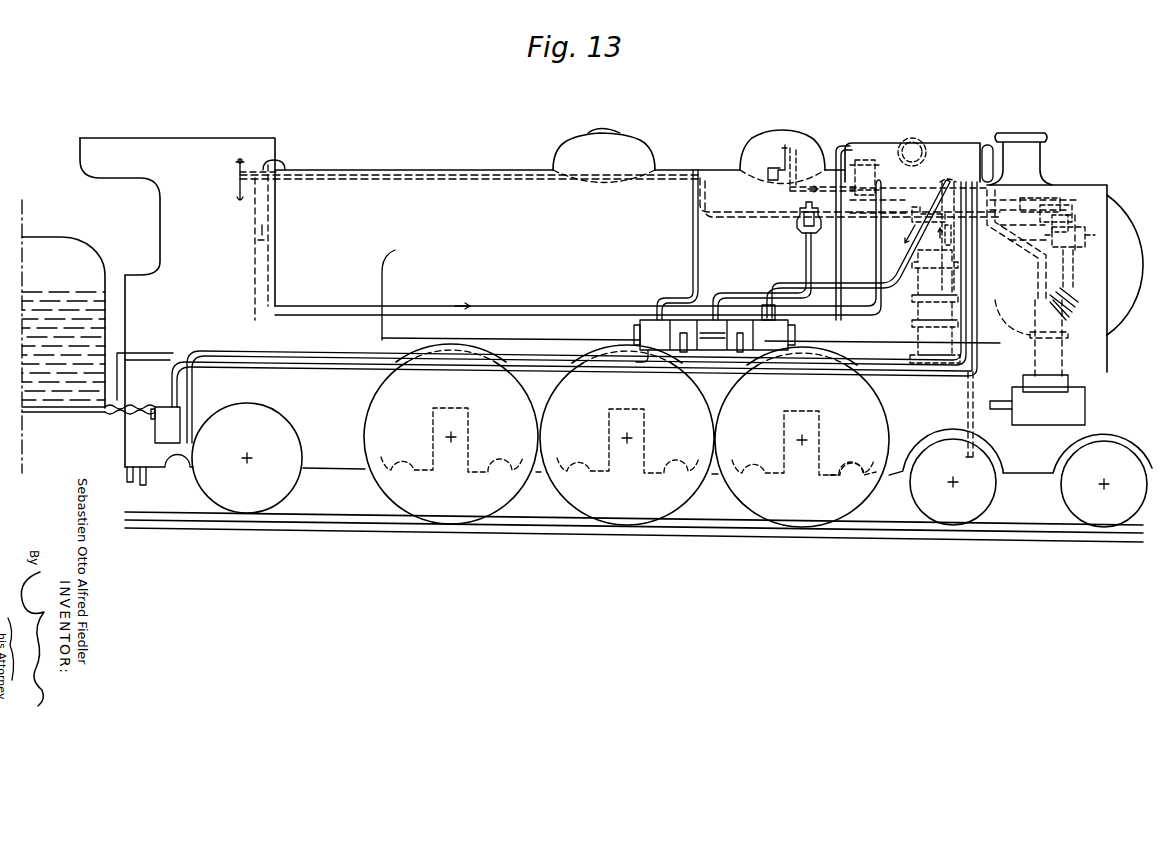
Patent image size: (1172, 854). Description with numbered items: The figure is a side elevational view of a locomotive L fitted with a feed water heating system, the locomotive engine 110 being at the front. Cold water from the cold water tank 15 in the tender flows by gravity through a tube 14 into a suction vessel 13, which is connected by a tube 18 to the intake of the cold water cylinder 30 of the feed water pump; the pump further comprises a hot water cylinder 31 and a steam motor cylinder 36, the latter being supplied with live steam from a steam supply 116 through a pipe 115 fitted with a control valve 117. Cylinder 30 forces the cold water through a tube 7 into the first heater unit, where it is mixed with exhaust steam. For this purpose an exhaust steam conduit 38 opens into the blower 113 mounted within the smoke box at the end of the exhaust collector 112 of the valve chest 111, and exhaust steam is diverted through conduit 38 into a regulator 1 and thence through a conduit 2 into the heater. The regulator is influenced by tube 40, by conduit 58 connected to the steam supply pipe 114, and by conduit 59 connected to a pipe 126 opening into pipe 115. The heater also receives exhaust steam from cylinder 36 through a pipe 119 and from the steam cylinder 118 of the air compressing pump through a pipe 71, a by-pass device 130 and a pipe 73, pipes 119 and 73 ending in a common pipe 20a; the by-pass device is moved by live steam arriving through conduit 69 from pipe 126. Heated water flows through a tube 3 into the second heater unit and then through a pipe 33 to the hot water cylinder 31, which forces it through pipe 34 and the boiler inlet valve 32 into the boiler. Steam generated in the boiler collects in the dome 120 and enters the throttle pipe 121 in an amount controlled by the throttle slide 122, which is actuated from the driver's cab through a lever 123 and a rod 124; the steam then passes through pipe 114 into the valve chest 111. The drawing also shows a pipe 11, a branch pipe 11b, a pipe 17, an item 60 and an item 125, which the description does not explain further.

The regulator-expander 1 is at (1077, 248).
The conduit 2 is at (993, 226).
The tube 3 is at (873, 160).
The tube 7 is at (841, 148).
The pipe 11 is at (974, 277).
The branch pipe 11b is at (964, 461).
The suction vessel 13 is at (167, 433).
The tube 14 is at (107, 413).
The cold water tank 15 is at (77, 405).
The pipe 17 is at (968, 260).
The tube 18 is at (343, 357).
The common pipe 20a is at (951, 176).
The cold water cylinder 30 is at (650, 334).
The hot water cylinder 31 is at (707, 341).
The boiler inlet valve 32 is at (814, 235).
The pipe 33 is at (875, 232).
The pipe 34 is at (801, 275).
The steam motor cylinder 36 is at (775, 325).
The exhaust steam conduit 38 is at (1074, 302).
The tube 40 is at (1068, 196).
The conduit 58 is at (1062, 216).
The conduit 59 is at (1036, 196).
The regulator 60 is at (920, 150).
The conduit 69 is at (751, 226).
The exhaust pipe 71 is at (953, 243).
The pipe 73 is at (946, 186).
The locomotive engine 110 is at (1078, 415).
The valve chest 111 is at (1070, 388).
The exhaust collector 112 is at (1064, 355).
The blower 113 is at (1024, 330).
The steam supply pipe 114 is at (787, 197).
The pipe 115 is at (570, 310).
The steam supply 116 is at (279, 165).
The control valve 117 is at (258, 248).
The steam cylinder of the air compressing pump 118 is at (925, 286).
The pipe 119 is at (915, 247).
The dome 120 is at (798, 132).
The throttle pipe 121 is at (797, 160).
The throttle slide 122 is at (782, 145).
The lever 123 is at (236, 186).
The rod 124 is at (416, 176).
The valve 125 is at (762, 168).
The pipe 126 is at (686, 266).
The by-pass device 130 is at (943, 225).
The locomotive L is at (497, 182).